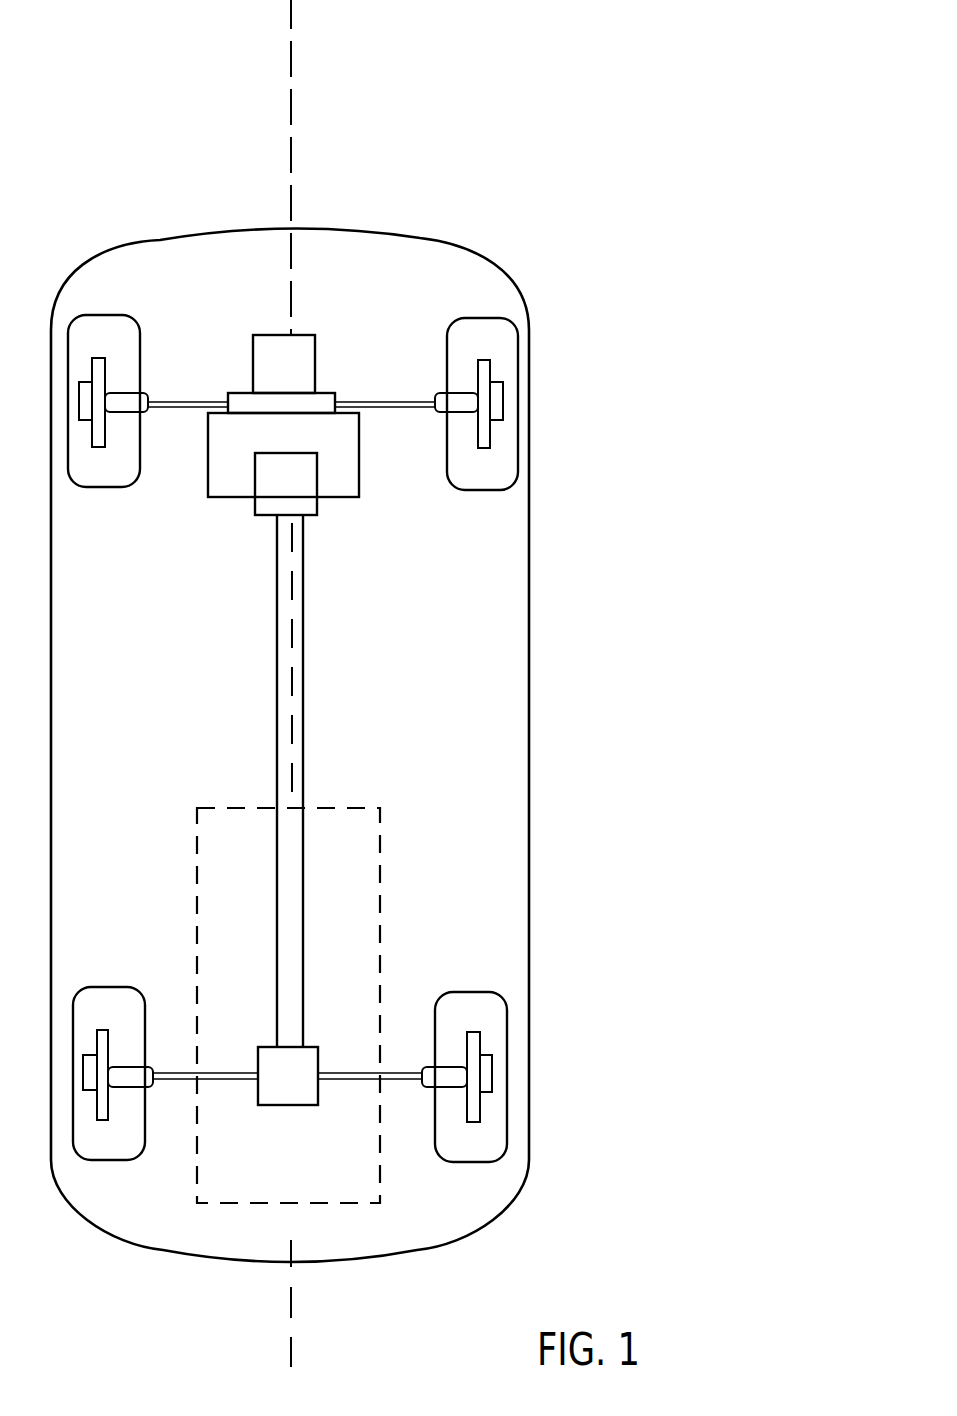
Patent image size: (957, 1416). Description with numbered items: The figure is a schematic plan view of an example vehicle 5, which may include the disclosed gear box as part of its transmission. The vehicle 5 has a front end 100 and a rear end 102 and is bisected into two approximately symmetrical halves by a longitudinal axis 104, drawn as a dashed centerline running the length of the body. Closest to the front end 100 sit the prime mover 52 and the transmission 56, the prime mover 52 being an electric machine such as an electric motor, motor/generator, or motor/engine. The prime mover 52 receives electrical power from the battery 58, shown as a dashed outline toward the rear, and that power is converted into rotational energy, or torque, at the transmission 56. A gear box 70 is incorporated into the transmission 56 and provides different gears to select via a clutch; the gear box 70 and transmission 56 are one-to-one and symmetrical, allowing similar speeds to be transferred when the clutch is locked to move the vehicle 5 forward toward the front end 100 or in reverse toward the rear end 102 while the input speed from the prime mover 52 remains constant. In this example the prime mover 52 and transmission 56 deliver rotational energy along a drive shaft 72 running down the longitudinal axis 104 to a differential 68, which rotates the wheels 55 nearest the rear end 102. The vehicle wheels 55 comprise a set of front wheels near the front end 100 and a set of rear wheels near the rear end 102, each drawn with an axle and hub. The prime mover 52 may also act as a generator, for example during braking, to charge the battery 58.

The vehicle 5 is at (622, 33).
The front end 100 is at (190, 168).
The rear end 102 is at (230, 1280).
The longitudinal axis 104 is at (291, 23).
The prime mover 52 is at (315, 357).
The transmission 56 is at (360, 453).
The gear box 70 is at (303, 507).
The drive shaft 72 is at (303, 670).
The battery 58 is at (337, 892).
The differential 68 is at (258, 1082).
The vehicle wheels 55 is at (490, 458).